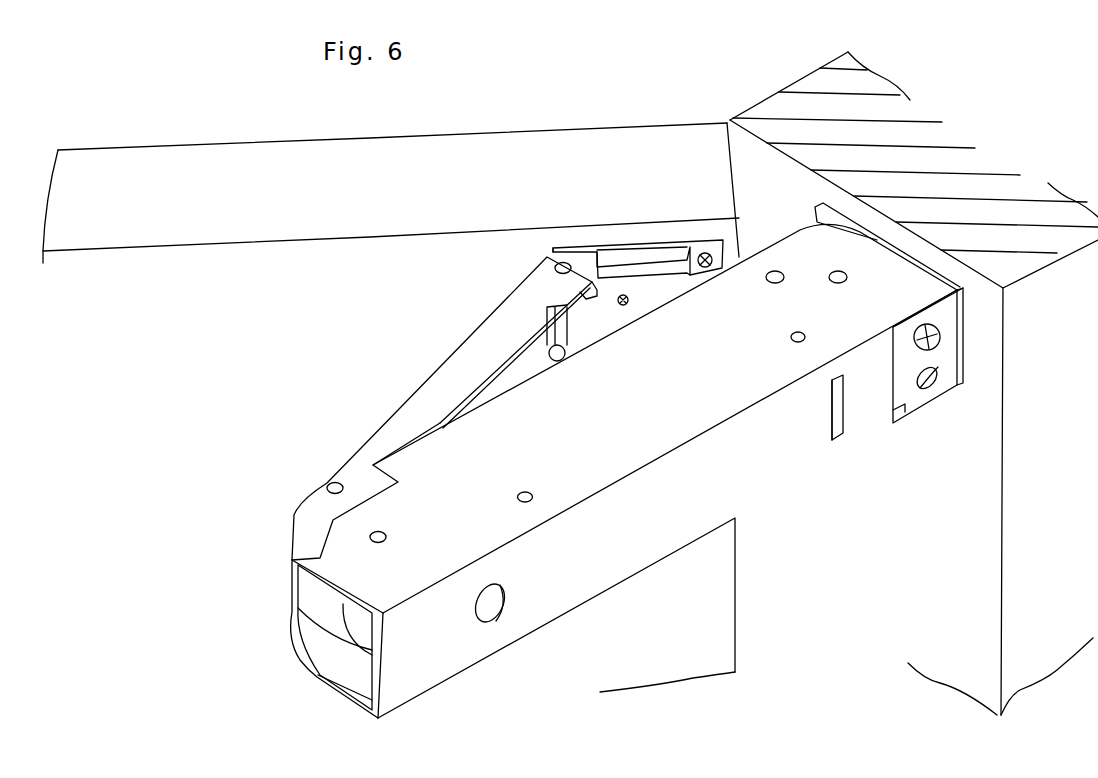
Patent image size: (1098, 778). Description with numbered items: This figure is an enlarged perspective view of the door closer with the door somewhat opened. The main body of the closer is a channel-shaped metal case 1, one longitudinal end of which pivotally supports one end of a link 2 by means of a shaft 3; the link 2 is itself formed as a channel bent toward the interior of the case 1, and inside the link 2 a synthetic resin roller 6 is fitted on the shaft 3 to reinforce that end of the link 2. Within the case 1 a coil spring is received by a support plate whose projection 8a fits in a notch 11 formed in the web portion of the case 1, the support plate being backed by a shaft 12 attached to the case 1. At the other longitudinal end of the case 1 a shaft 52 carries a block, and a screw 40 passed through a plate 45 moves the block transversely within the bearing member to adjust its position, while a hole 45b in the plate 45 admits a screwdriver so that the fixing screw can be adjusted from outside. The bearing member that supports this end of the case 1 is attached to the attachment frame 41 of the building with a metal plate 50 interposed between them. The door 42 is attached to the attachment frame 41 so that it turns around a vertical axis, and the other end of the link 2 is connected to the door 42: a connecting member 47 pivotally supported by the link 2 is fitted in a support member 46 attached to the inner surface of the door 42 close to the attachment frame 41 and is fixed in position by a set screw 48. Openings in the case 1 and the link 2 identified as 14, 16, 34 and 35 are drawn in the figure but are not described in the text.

The case 1 is at (594, 558).
The link 2 is at (403, 413).
The shaft 3 is at (383, 533).
The roller 6 is at (350, 628).
The projection 8a is at (850, 418).
The notch 11 is at (832, 428).
The shaft 12 is at (790, 341).
The hole 14 is at (529, 494).
The hole 16 is at (490, 623).
The hole 34 is at (766, 280).
The hole 35 is at (328, 487).
The screw 40 is at (967, 317).
The attachment frame 41 is at (948, 645).
The door 42 is at (482, 125).
The plate 45 is at (940, 357).
The hole 45b is at (933, 383).
The support member 46 is at (637, 248).
The connecting member 47 is at (655, 292).
The set screw 48 is at (619, 296).
The metal plate 50 is at (967, 340).
The shaft 52 is at (843, 285).